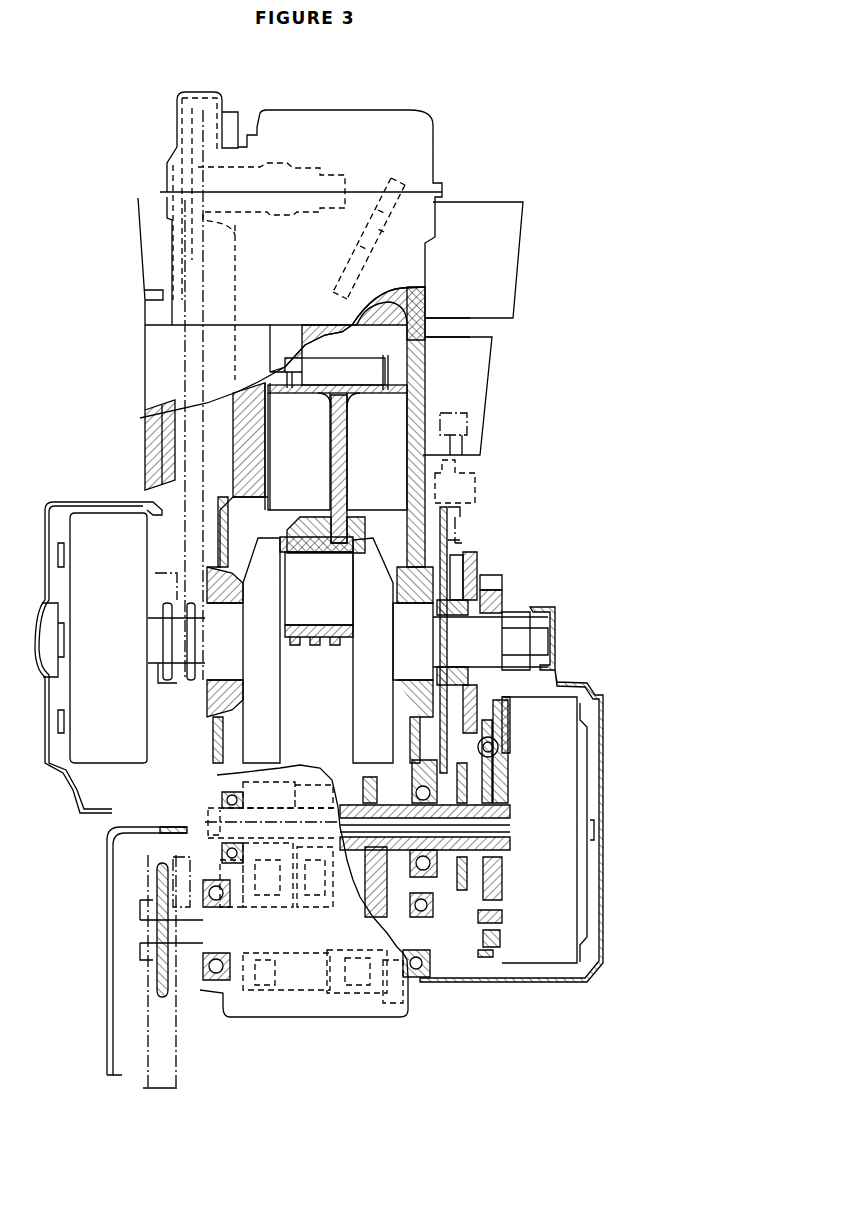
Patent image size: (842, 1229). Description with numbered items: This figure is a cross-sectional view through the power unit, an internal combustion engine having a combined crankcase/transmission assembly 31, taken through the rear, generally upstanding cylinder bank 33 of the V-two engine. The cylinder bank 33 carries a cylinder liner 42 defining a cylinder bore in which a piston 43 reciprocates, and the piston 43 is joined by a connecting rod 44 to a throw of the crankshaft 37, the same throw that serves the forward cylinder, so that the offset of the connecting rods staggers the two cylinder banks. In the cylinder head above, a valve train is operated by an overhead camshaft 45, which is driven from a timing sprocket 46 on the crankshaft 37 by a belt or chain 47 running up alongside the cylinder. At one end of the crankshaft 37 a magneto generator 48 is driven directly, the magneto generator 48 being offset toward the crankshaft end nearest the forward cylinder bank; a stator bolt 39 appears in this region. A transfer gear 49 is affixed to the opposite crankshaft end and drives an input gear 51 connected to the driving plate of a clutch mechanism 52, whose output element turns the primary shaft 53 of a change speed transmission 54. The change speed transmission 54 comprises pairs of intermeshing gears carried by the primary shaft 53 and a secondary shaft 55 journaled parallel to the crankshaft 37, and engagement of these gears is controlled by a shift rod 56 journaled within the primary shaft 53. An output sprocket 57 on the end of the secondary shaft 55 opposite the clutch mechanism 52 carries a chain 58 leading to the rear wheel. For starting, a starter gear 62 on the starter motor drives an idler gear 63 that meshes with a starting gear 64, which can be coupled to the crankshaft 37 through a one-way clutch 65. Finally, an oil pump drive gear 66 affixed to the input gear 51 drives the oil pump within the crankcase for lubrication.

The combined crankcase/transmission assembly 31 is at (358, 659).
The upstanding cylinder bank 33 is at (440, 156).
The crankshaft 37 is at (540, 646).
The stator bolt 39 is at (163, 683).
The cylinder liner 42 is at (270, 440).
The piston 43 is at (372, 405).
The connecting rod 44 is at (348, 475).
The overhead camshaft 45 is at (348, 175).
The timing sprocket 46 is at (188, 683).
The belt or chain 47 is at (187, 532).
The magneto generator 48 is at (112, 763).
The transfer gear 49 is at (493, 575).
The input gear 51 is at (490, 953).
The clutch mechanism 52 is at (587, 877).
The primary shaft 53 is at (508, 815).
The change speed transmission 54 is at (348, 996).
The secondary shaft 55 is at (433, 980).
The shift rod 56 is at (393, 800).
The output sprocket 57 is at (160, 998).
The chain 58 is at (173, 1065).
The starter gear 62 is at (458, 413).
The idler gear 63 is at (475, 475).
The starting gear 64 is at (458, 517).
The one-way clutch 65 is at (475, 552).
The oil pump drive gear 66 is at (463, 933).